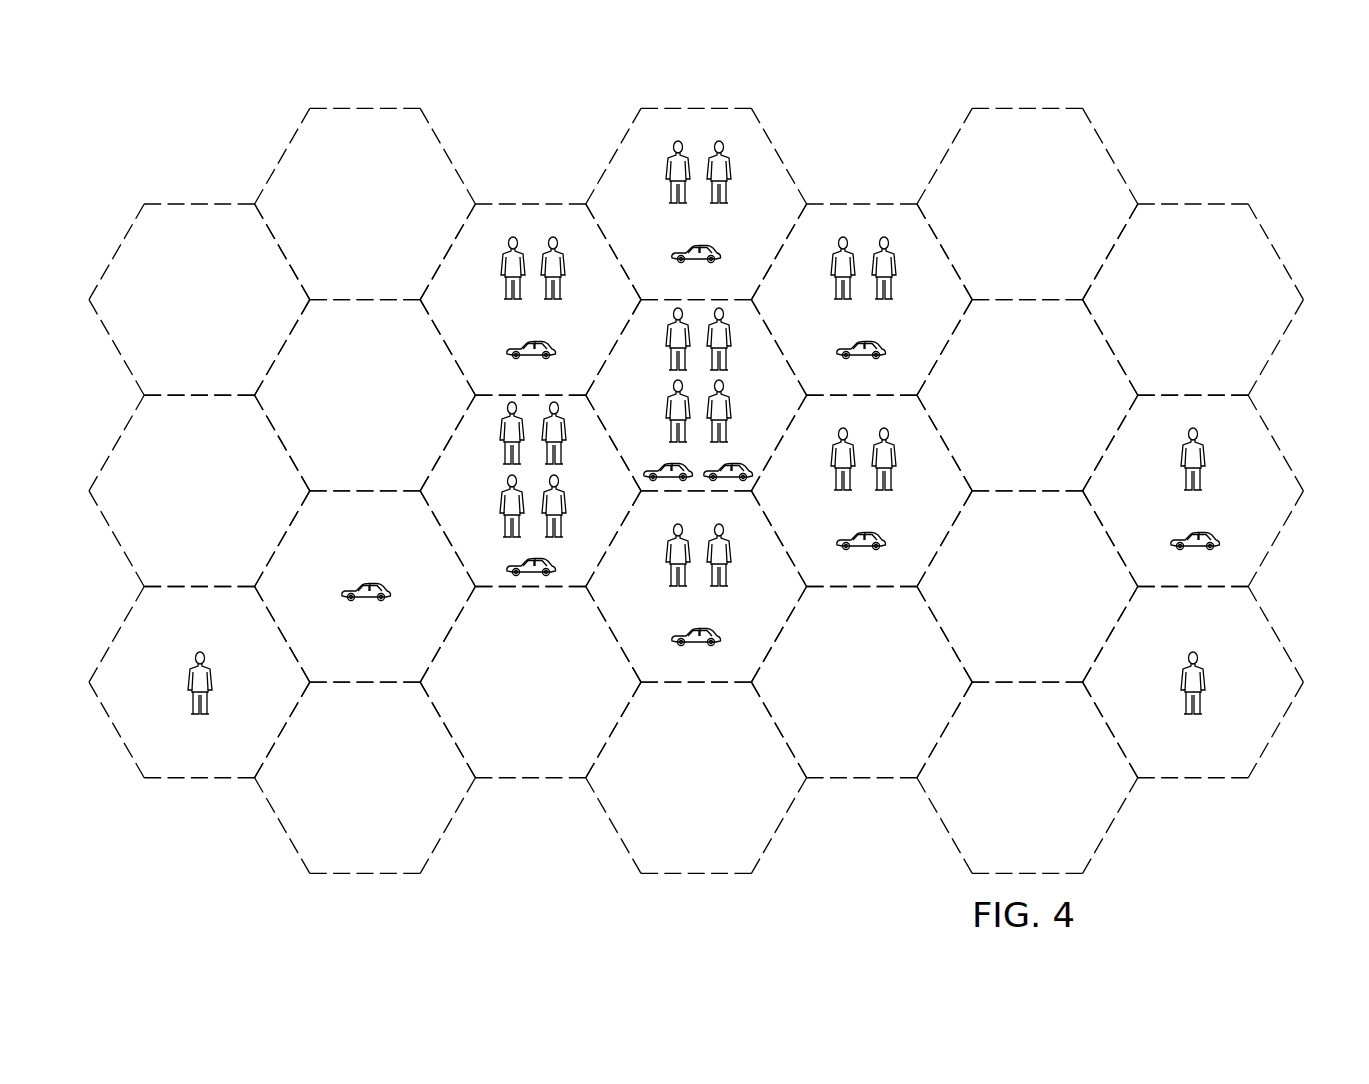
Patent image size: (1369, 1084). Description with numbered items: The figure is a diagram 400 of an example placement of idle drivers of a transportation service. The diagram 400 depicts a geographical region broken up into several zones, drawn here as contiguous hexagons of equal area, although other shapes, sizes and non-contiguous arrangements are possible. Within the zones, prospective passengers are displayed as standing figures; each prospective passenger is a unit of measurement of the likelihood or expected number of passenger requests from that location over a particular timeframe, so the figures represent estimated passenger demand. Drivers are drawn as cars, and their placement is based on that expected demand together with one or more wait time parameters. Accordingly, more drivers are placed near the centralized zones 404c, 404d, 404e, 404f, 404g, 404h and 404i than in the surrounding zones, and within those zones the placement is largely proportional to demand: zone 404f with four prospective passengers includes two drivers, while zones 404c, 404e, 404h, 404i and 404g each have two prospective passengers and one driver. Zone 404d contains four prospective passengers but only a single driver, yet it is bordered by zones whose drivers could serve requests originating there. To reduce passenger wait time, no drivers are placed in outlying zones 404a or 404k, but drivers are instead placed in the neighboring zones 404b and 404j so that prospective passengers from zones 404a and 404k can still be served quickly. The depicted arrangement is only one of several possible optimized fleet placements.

The diagram 400 is at (222, 136).
The zone 404a is at (200, 773).
The zone 404b is at (363, 673).
The zone 404c is at (532, 212).
The zone 404d is at (530, 580).
The zone 404e is at (777, 165).
The zone 404f is at (763, 338).
The zone 404g is at (700, 673).
The zone 404h is at (862, 212).
The zone 404i is at (868, 580).
The zone 404j is at (1303, 432).
The zone 404k is at (1277, 722).